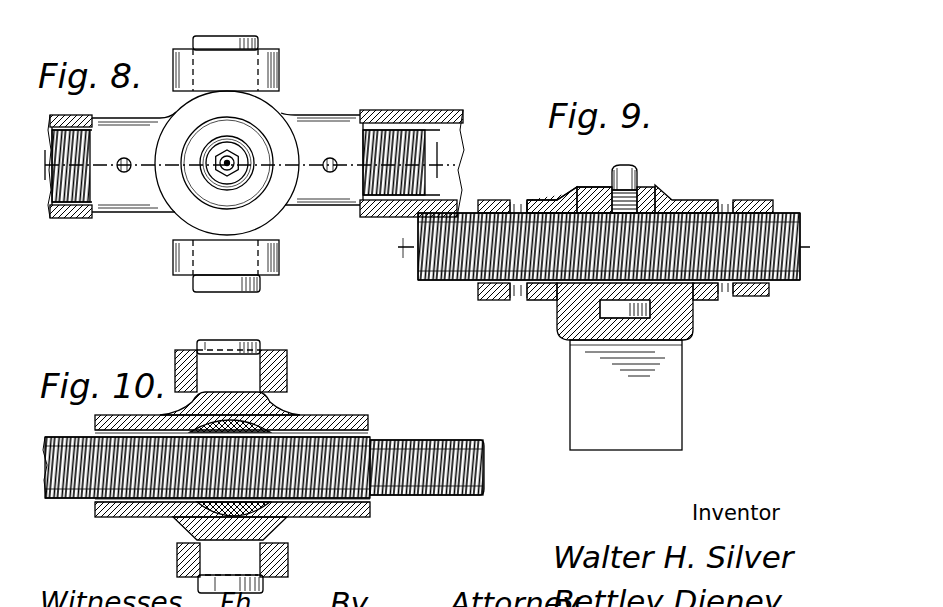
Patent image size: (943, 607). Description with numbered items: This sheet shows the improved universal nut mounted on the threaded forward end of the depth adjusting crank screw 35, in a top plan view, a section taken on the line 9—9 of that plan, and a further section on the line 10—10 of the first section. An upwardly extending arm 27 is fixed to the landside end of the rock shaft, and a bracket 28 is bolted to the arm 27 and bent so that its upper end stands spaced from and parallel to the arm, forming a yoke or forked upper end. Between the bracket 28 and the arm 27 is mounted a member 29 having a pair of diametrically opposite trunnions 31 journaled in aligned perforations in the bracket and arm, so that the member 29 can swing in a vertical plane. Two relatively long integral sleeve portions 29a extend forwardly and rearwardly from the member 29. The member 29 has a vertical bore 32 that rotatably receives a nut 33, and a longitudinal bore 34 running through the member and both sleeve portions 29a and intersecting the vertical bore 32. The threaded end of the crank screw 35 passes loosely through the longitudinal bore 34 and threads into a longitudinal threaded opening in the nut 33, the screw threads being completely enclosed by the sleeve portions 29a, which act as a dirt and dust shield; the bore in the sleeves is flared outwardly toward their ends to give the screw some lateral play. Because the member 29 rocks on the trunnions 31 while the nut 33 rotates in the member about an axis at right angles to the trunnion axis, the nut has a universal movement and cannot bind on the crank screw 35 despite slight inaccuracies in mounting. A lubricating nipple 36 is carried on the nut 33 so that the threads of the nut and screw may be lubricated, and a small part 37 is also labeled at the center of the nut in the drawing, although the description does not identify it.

In FIG. 8, the section line 9- 9 is at (241, 160).
In FIG. 9, the section line 10- 10 is at (601, 246).
In FIG. 8, the upwardly extending arm 27 is at (280, 62).
In FIG. 9, the upwardly extending arm 27 is at (683, 415).
In FIG. 10, the upwardly extending arm 27 is at (288, 380).
In FIG. 8, the bracket 28 is at (280, 268).
In FIG. 10, the bracket 28 is at (290, 545).
In FIG. 8, the member 29 is at (302, 114).
In FIG. 9, the member 29 is at (710, 200).
In FIG. 10, the member 29 is at (344, 409).
In FIG. 8, the sleeve portions 29a is at (460, 110).
In FIG. 9, the sleeve portions 29a is at (492, 300).
In FIG. 10, the sleeve portions 29a is at (103, 520).
In FIG. 8, the trunnions 31 is at (250, 40).
In FIG. 10, the trunnions 31 is at (258, 345).
In FIG. 8, the vertical bore 32 is at (183, 178).
In FIG. 9, the vertical bore 32 is at (575, 200).
In FIG. 10, the vertical bore 32 is at (180, 523).
In FIG. 8, the nut 33 is at (200, 188).
In FIG. 9, the nut 33 is at (660, 190).
In FIG. 10, the nut 33 is at (287, 517).
In FIG. 9, the longitudinal bore 34 is at (772, 200).
In FIG. 10, the longitudinal bore 34 is at (97, 500).
In FIG. 9, the depth adjusting crank screw 35 is at (452, 282).
In FIG. 10, the depth adjusting crank screw 35 is at (425, 435).
In FIG. 9, the lubricating nipple 36 is at (640, 188).
In FIG. 8, the adjusting nut 37 is at (236, 177).
In FIG. 9, the adjusting nut 37 is at (620, 167).